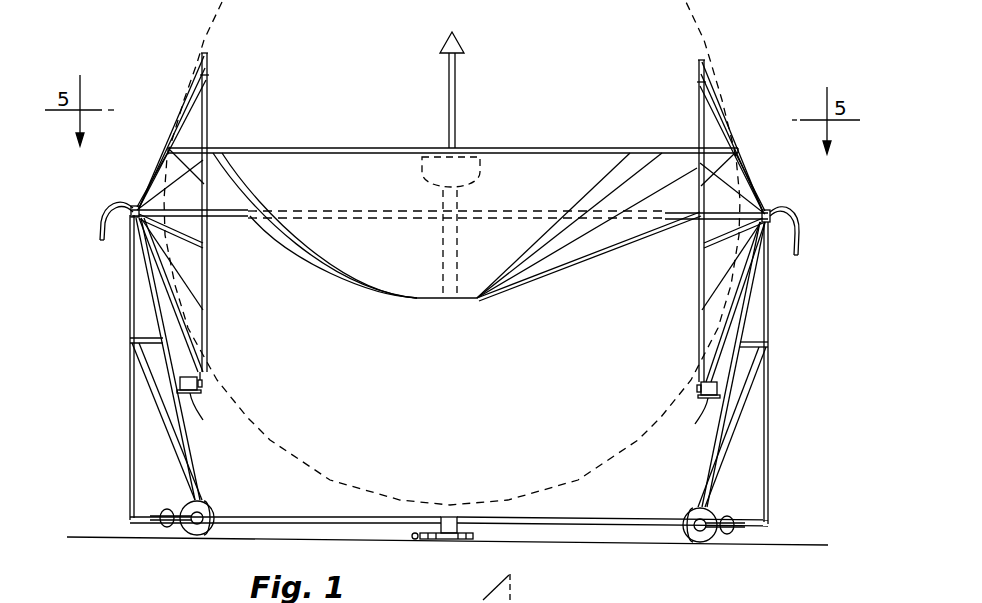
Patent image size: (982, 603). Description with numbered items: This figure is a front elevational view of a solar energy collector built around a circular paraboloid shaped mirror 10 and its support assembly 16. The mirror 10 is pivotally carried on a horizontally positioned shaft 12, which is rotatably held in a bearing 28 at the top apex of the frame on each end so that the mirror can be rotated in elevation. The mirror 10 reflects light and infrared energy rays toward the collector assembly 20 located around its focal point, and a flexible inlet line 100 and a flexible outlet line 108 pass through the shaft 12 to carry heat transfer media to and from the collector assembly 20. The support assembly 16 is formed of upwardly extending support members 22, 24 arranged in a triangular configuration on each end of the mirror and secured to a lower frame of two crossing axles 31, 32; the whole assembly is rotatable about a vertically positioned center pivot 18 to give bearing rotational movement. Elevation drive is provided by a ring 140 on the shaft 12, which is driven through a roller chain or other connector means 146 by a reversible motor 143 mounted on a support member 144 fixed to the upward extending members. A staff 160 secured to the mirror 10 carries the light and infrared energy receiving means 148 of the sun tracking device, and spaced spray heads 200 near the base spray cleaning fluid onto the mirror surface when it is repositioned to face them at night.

The circular paraboloid shaped mirror 10 is at (421, 303).
The shaft 12 is at (678, 221).
The support assembly 16 is at (123, 407).
The center pivot 18 is at (450, 517).
The collector assembly 20 is at (497, 178).
The upwardly extending support member 22 is at (189, 468).
The upwardly extending support member 24 is at (134, 470).
The bearing 28 is at (131, 204).
The axle 31 is at (371, 524).
The axle 32 is at (565, 524).
The flexible inlet line 100 is at (798, 250).
The flexible outlet line 108 is at (100, 238).
The ring 140 is at (208, 310).
The reversible motor 143 is at (202, 393).
The support member 144 is at (203, 420).
The connector means 146 is at (203, 384).
The light and infrared energy receiving means 148 is at (473, 41).
The staff 160 is at (457, 97).
The spray head 200 is at (411, 540).